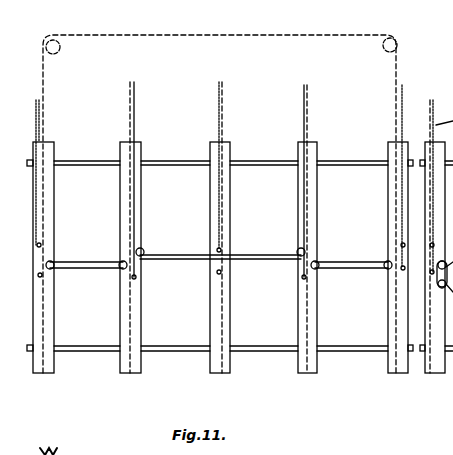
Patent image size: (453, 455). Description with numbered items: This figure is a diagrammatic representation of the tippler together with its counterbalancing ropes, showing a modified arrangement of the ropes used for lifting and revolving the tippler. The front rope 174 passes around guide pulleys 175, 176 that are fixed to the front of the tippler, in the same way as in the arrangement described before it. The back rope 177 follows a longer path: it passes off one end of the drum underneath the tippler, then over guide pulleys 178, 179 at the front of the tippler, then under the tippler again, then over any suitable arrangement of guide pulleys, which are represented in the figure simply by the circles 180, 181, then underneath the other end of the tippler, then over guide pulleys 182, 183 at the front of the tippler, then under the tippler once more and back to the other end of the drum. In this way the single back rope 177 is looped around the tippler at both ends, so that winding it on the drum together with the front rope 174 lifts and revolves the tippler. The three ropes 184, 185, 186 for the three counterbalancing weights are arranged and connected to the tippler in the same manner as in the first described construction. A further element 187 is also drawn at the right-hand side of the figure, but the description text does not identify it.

The front rope 174 is at (134, 116).
The guide pulley 175 is at (143, 250).
The guide pulley 176 is at (298, 256).
The back rope 177 is at (211, 35).
The guide pulley 178 is at (121, 269).
The guide pulley 179 is at (52, 269).
The guide pulley 180 is at (63, 49).
The guide pulley 181 is at (382, 50).
The guide pulley 182 is at (385, 269).
The guide pulley 183 is at (317, 269).
The counterbalancing rope 184 is at (40, 129).
The counterbalancing rope 185 is at (222, 126).
The counterbalancing rope 186 is at (403, 90).
The post 187 is at (430, 374).